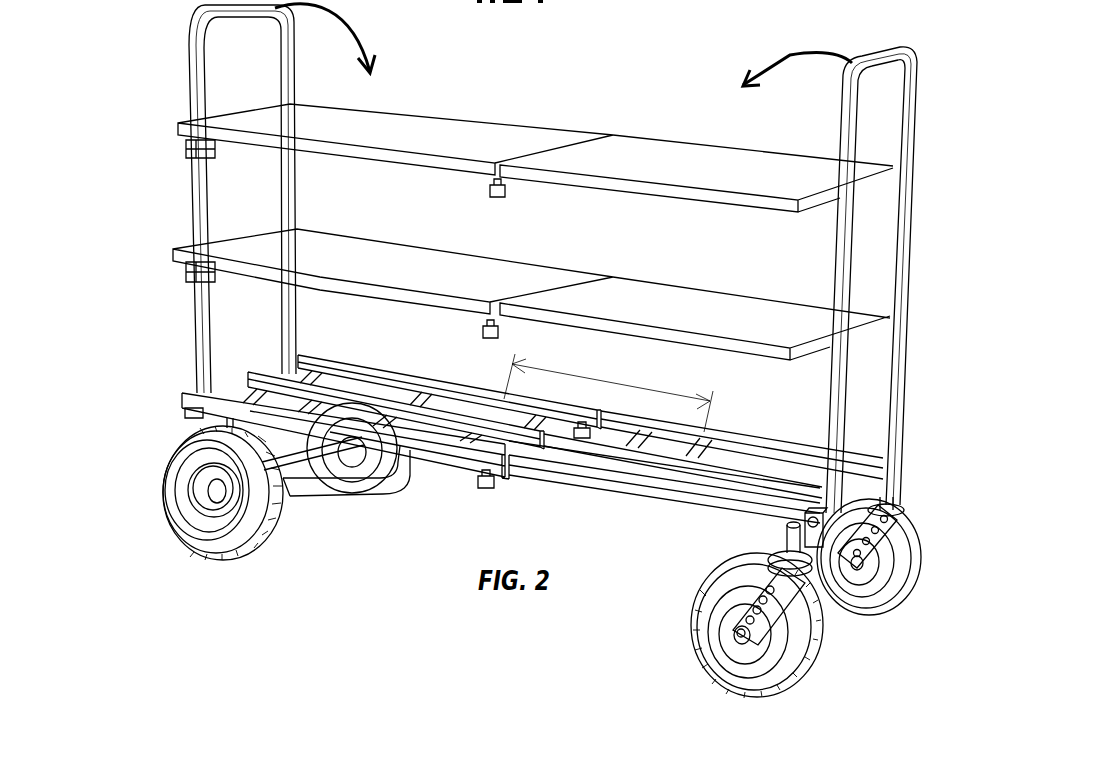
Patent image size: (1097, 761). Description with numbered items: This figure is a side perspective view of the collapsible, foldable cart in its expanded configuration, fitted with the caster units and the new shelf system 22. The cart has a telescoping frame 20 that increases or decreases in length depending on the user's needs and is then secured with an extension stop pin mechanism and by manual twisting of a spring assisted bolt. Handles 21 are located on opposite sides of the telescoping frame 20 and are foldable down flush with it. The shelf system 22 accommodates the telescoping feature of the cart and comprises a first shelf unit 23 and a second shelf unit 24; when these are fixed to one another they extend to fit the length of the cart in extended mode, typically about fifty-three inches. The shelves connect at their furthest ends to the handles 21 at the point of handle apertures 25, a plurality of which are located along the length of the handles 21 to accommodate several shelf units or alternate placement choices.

The telescoping frame 20 is at (517, 470).
The handles 21 is at (195, 25).
The shelf system 22 is at (532, 77).
The first shelf unit 23 is at (696, 247).
The second shelf unit 24 is at (393, 221).
The handle apertures 25 is at (186, 150).